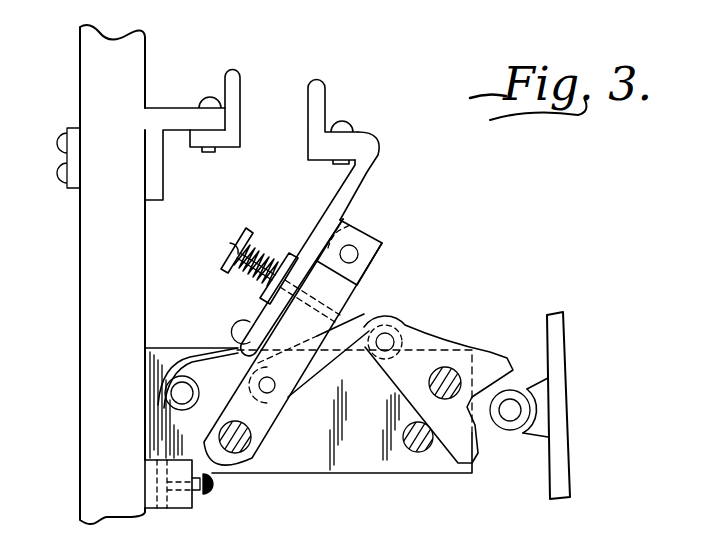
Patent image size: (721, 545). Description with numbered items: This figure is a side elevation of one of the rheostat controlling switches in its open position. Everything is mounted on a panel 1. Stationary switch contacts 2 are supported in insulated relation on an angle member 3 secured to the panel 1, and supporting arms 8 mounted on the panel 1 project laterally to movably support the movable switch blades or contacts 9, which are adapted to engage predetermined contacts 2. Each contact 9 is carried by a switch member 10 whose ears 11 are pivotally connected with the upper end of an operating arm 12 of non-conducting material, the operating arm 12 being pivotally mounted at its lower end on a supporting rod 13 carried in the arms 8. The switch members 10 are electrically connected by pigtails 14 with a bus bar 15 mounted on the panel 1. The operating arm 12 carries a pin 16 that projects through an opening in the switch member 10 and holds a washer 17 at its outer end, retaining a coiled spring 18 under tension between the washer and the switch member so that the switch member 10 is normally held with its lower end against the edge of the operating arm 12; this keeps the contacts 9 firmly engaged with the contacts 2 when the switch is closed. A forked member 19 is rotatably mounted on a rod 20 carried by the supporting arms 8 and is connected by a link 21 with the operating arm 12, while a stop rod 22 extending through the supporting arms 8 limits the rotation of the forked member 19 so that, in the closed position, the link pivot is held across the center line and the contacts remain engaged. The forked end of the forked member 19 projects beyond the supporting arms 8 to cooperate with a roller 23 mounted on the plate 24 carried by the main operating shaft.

The panel 1 is at (90, 283).
The stationary switch contacts 2 is at (234, 85).
The angle member 3 is at (167, 113).
The supporting arms 8 is at (308, 460).
The movable switch blades or contacts 9 is at (320, 113).
The switch members 10 is at (346, 197).
The ears 11 is at (383, 244).
The operating arms 12 is at (293, 328).
The supporting rods 13 is at (232, 453).
The pigtails 14 is at (188, 358).
The bus bar 15 is at (147, 478).
The pins 16 is at (253, 244).
The washers 17 is at (243, 237).
The coiled springs 18 is at (275, 255).
The forked members 19 is at (460, 363).
The rod 20 is at (448, 397).
The links 21 is at (352, 388).
The stop rod 22 is at (417, 452).
The rollers 23 is at (505, 437).
The plate 24 is at (558, 378).